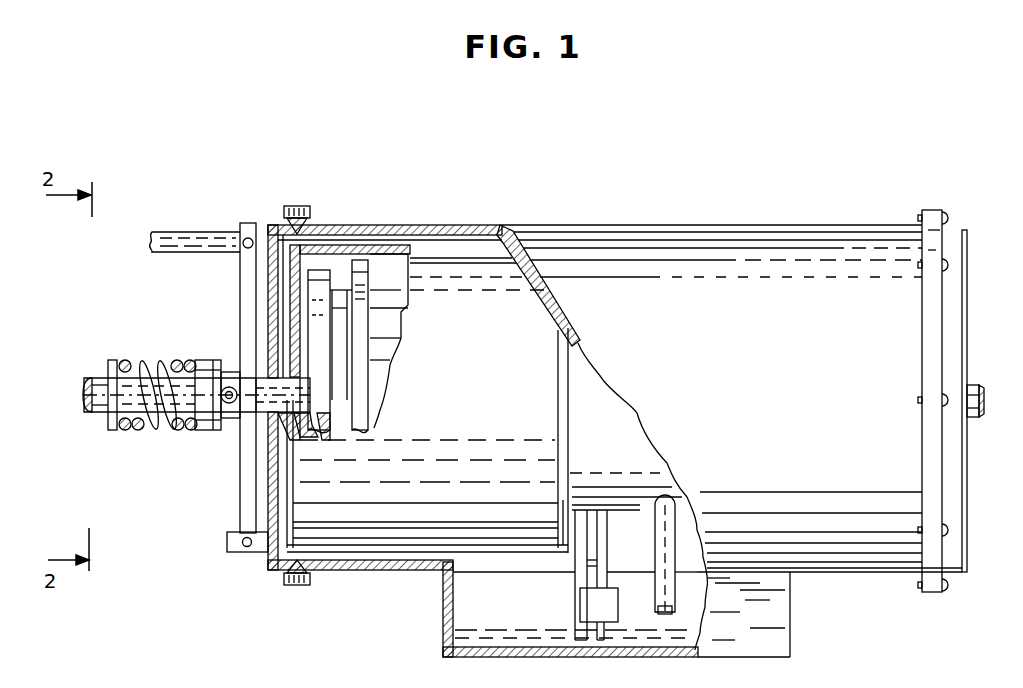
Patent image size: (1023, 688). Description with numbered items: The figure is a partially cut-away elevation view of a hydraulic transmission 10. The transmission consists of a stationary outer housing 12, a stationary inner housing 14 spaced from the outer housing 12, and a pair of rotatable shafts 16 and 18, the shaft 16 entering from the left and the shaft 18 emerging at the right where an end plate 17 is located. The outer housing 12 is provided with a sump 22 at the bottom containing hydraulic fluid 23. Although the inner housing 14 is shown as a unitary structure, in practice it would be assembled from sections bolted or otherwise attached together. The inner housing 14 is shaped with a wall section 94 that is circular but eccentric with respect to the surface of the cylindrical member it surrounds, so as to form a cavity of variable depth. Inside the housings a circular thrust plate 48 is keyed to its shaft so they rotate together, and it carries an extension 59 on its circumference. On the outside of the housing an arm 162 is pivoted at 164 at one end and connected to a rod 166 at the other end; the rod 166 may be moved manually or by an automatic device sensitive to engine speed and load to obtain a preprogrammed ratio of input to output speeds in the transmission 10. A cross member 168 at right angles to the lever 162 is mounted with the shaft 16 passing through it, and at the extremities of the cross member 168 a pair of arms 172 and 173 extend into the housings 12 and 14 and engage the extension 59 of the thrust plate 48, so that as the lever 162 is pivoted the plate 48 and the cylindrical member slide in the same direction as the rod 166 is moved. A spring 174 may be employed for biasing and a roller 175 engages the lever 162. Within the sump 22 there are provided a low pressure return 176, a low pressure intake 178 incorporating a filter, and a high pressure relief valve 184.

The hydraulic transmission 10 is at (594, 221).
The outer housing 12 is at (474, 224).
The inner housing 14 is at (326, 245).
The rotatable shaft 16 is at (94, 378).
The end plate 17 is at (970, 401).
The rotatable shaft 18 is at (975, 418).
The sump 22 is at (443, 597).
The hydraulic fluid 23 is at (537, 638).
The thrust plate 48 is at (383, 258).
The extension 59 is at (352, 258).
The wall section 94 is at (646, 470).
The arm 162 is at (240, 265).
The pivot 164 is at (242, 552).
The rod 166 is at (178, 232).
The cross member 168 is at (207, 431).
The arm 172 is at (377, 424).
The arm 173 is at (215, 433).
The spring 174 is at (148, 431).
The roller 175 is at (224, 388).
The low pressure return 176 is at (597, 573).
The low pressure intake 178 is at (607, 545).
The high pressure relief valve 184 is at (673, 593).